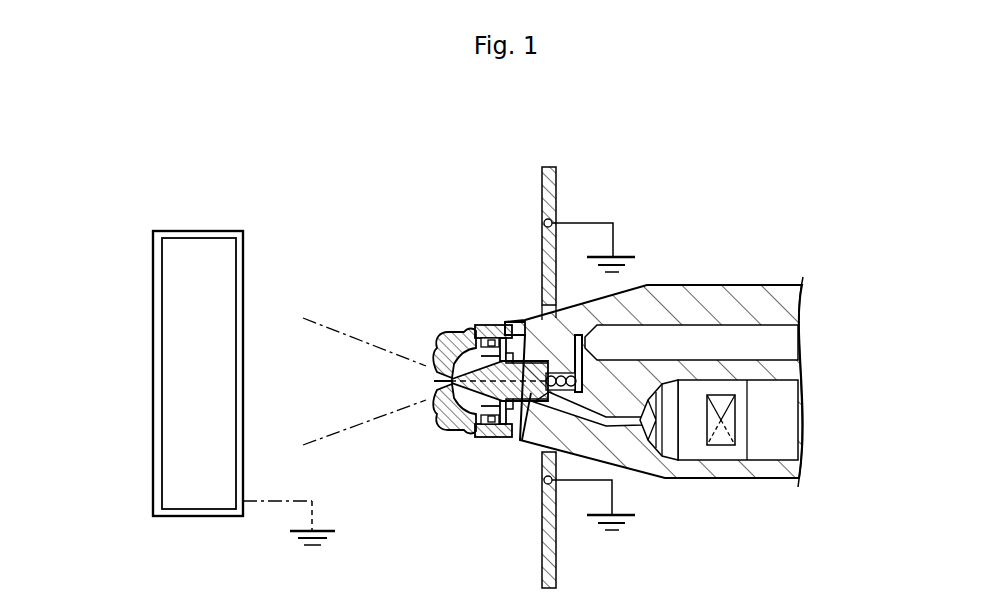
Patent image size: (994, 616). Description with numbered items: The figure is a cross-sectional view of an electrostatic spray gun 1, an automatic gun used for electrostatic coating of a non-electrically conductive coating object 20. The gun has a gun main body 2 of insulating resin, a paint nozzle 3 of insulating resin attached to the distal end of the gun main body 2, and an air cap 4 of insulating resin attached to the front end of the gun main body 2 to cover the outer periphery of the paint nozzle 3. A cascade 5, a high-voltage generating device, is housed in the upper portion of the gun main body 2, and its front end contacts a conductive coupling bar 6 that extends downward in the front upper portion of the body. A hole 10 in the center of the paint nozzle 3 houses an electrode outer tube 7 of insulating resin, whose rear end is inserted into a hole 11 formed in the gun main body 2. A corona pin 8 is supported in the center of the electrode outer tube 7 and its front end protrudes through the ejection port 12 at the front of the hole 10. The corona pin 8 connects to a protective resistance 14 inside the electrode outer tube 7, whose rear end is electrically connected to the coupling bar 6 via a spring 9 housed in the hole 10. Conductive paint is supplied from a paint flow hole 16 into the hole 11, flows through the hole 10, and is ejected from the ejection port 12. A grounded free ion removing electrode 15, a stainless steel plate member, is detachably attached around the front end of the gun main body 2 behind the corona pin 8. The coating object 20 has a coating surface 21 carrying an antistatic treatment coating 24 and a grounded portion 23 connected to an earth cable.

The spray gun 1 is at (766, 184).
The gun main body 2 is at (738, 285).
The paint nozzle 3 is at (470, 420).
The air cap 4 is at (450, 330).
The cascade 5 is at (704, 333).
The coupling bar 6 is at (530, 320).
The electrode outer tube 7 is at (521, 432).
The corona pin 8 is at (436, 345).
The spring 9 is at (510, 335).
The hole 10 is at (478, 325).
The hole 11 is at (530, 452).
The ejection port 12 is at (431, 398).
The protective resistance 14 is at (496, 440).
The free ion removing electrode 15 is at (543, 185).
The paint flow hole 16 is at (615, 427).
The non-electrically conductive coating object 20 is at (222, 258).
The coating surface 21 is at (236, 288).
The grounded portion 23 is at (245, 501).
The antistatic treatment coating 24 is at (243, 370).